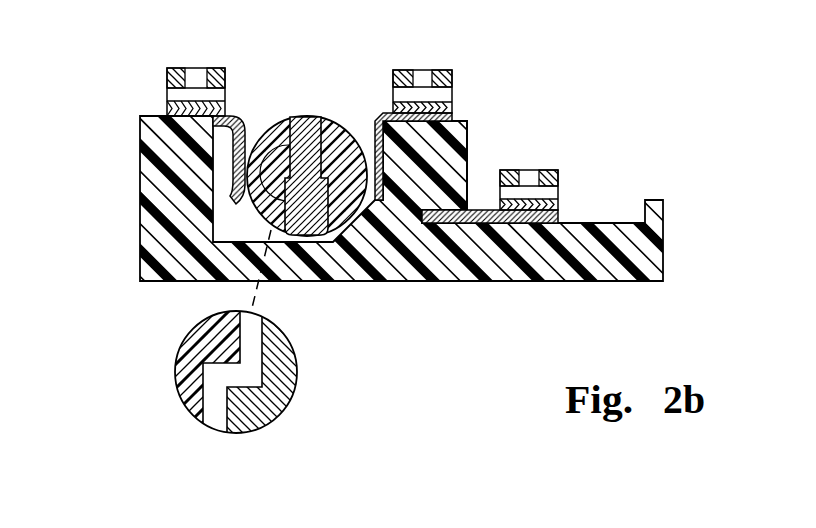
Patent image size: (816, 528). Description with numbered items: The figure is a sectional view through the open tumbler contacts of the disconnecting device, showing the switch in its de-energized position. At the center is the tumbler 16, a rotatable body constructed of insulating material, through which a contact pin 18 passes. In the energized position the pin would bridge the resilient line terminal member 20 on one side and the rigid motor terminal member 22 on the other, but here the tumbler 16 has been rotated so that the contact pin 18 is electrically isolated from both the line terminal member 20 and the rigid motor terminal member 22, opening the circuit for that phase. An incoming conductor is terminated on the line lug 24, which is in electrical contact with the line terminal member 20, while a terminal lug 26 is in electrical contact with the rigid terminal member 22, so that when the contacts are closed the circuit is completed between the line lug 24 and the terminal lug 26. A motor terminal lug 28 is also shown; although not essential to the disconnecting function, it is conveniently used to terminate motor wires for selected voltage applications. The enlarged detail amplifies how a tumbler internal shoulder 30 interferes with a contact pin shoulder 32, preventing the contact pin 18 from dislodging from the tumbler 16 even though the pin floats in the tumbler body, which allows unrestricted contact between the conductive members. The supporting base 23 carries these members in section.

The tumbler 16 is at (364, 135).
The contact pin 18 is at (305, 116).
The resilient line terminal member 20 is at (252, 128).
The rigid motor terminal member 22 is at (386, 141).
The substrate body 23 is at (512, 282).
The line lug 24 is at (217, 68).
The terminal lug 26 is at (408, 70).
The motor terminal lug 28 is at (513, 170).
The tumbler internal shoulder 30 is at (190, 337).
The contact pin shoulder 32 is at (297, 390).